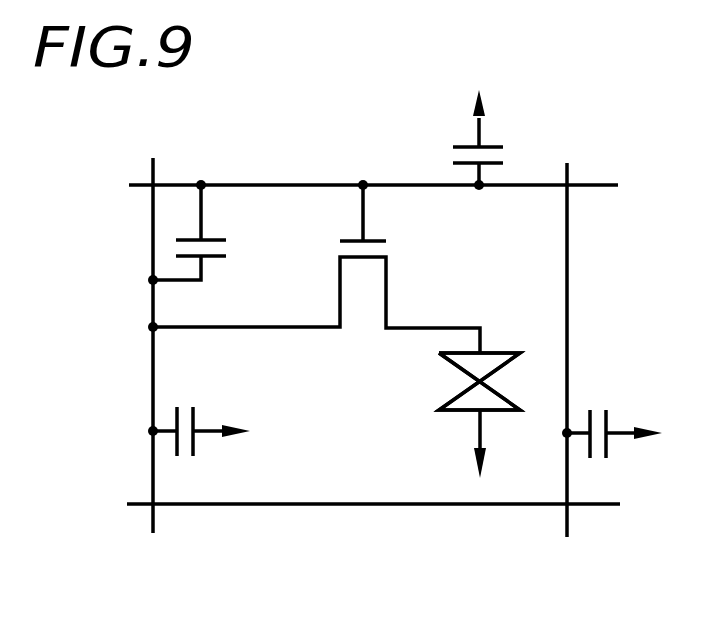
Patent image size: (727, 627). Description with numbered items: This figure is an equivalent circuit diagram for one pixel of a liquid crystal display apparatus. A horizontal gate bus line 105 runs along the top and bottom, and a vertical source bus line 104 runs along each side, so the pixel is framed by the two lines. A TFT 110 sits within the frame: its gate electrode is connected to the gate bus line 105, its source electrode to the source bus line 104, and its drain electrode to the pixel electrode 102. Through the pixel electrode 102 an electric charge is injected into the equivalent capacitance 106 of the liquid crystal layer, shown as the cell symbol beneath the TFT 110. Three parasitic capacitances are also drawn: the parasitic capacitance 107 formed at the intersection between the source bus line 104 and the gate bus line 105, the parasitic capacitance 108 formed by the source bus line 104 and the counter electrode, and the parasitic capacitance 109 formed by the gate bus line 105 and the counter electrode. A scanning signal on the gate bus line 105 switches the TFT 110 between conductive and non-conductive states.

The pixel electrode 102 is at (515, 350).
The source bus line 104 is at (153, 357).
The gate bus line 105 is at (265, 185).
The equivalent capacitance 106 is at (433, 391).
The parasitic capacitance 107 is at (213, 262).
The parasitic capacitance 108 is at (196, 450).
The parasitic capacitance 109 is at (486, 145).
The TFT 110 is at (372, 238).